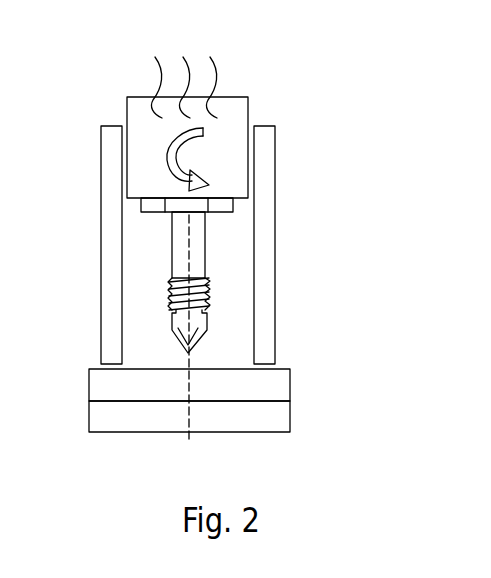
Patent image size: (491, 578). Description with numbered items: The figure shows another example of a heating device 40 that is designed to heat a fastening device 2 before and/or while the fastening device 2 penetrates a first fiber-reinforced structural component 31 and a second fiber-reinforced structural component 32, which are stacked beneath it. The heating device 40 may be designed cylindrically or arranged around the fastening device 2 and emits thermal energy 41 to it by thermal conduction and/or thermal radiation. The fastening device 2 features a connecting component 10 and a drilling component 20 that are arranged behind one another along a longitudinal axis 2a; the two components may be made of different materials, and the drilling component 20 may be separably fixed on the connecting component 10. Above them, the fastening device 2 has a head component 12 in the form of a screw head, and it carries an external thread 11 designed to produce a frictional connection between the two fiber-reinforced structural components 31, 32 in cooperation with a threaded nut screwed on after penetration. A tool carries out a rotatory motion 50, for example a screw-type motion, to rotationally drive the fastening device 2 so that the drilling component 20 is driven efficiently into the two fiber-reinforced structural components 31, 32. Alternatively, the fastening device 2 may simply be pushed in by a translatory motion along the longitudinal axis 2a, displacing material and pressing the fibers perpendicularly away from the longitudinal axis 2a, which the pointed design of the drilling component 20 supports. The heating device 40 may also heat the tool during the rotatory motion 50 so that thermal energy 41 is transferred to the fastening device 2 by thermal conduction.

The fastening device 2 is at (133, 266).
The longitudinal axis 2a is at (187, 418).
The connecting component 10 is at (203, 233).
The external thread 11 is at (205, 288).
The head component 12 is at (218, 203).
The drilling component 20 is at (200, 335).
The first fiber-reinforced structural component 31 is at (278, 387).
The second fiber-reinforced structural component 32 is at (283, 424).
The heating device 40 is at (108, 190).
The thermal energy 41 is at (221, 53).
The rotatory motion 50 is at (167, 153).